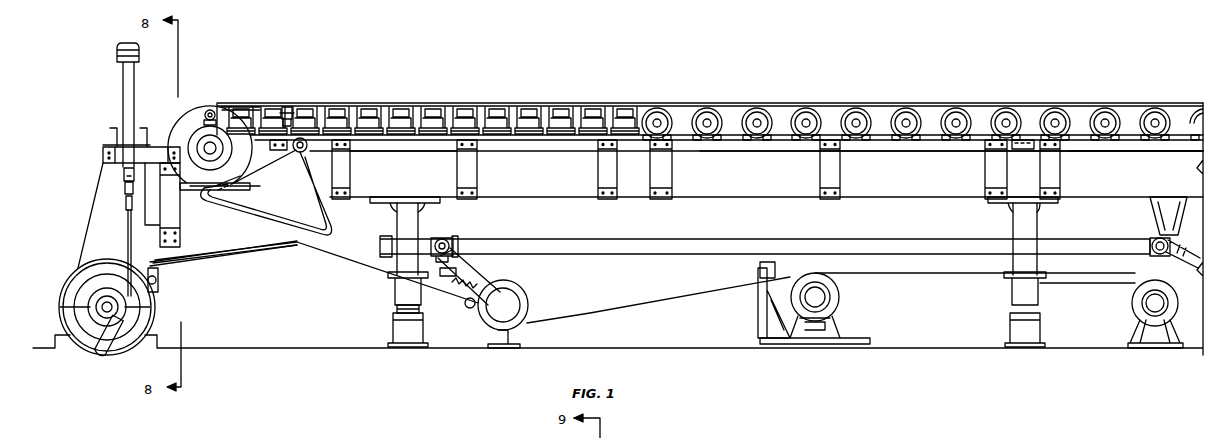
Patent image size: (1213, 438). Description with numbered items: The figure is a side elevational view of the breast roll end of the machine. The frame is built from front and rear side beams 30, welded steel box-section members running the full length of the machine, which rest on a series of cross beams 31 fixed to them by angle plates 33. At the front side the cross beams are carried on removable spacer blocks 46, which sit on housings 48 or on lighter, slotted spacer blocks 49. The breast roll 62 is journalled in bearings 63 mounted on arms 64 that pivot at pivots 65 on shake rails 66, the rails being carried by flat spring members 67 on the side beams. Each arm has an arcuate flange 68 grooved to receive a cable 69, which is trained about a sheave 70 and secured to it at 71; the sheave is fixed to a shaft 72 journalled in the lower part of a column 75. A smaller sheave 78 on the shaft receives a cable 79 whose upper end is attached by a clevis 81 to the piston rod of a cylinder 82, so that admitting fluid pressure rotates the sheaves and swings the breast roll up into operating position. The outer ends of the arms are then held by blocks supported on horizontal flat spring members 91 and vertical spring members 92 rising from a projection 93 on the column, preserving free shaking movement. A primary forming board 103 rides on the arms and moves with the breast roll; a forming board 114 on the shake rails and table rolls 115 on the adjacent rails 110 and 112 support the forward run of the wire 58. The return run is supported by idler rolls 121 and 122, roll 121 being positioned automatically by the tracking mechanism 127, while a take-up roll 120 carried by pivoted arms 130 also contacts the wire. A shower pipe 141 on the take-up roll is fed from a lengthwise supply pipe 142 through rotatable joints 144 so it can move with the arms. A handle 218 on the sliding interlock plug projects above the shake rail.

The side beams 30 is at (710, 150).
The cross beams 31 is at (400, 224).
The angle plates 33 is at (420, 218).
The removable spacer blocks 46 is at (398, 288).
The housings 48 is at (392, 328).
The spacer blocks 49 is at (397, 305).
The wire 58 is at (926, 106).
The breast roll 62 is at (198, 117).
The bearings 63 is at (231, 152).
The arms 64 is at (216, 206).
The pivots 65 is at (299, 152).
The shake rails 66 is at (402, 151).
The flat spring members 67 is at (348, 182).
The arcuate flanges 68 is at (266, 192).
The cable 69 is at (232, 250).
The sheaves 70 is at (148, 305).
The cable securement 71 is at (158, 272).
The shafts 72 is at (104, 299).
The columns 75 is at (102, 203).
The smaller sheave 78 is at (68, 307).
The cables 79 is at (127, 238).
The clevices 81 is at (124, 186).
The cylinders 82 is at (121, 85).
The horizontal flat spring members 91 is at (160, 147).
The vertical spring members 92 is at (181, 211).
The projection 93 is at (194, 254).
The primary forming board 103 is at (262, 105).
The rails 110 is at (760, 151).
The rails 112 is at (1115, 150).
The forming board 114 is at (468, 105).
The table rolls 115 is at (716, 106).
The take-up roll 120 is at (527, 310).
The idler roll 121 is at (840, 294).
The idler roll 122 is at (1130, 297).
The adjusting mechanism 127 is at (756, 311).
The arms 130 is at (476, 268).
The shower pipe 141 is at (470, 312).
The supply pipe 142 is at (855, 238).
The rotatable joints 144 is at (450, 243).
The handle 218 is at (285, 107).